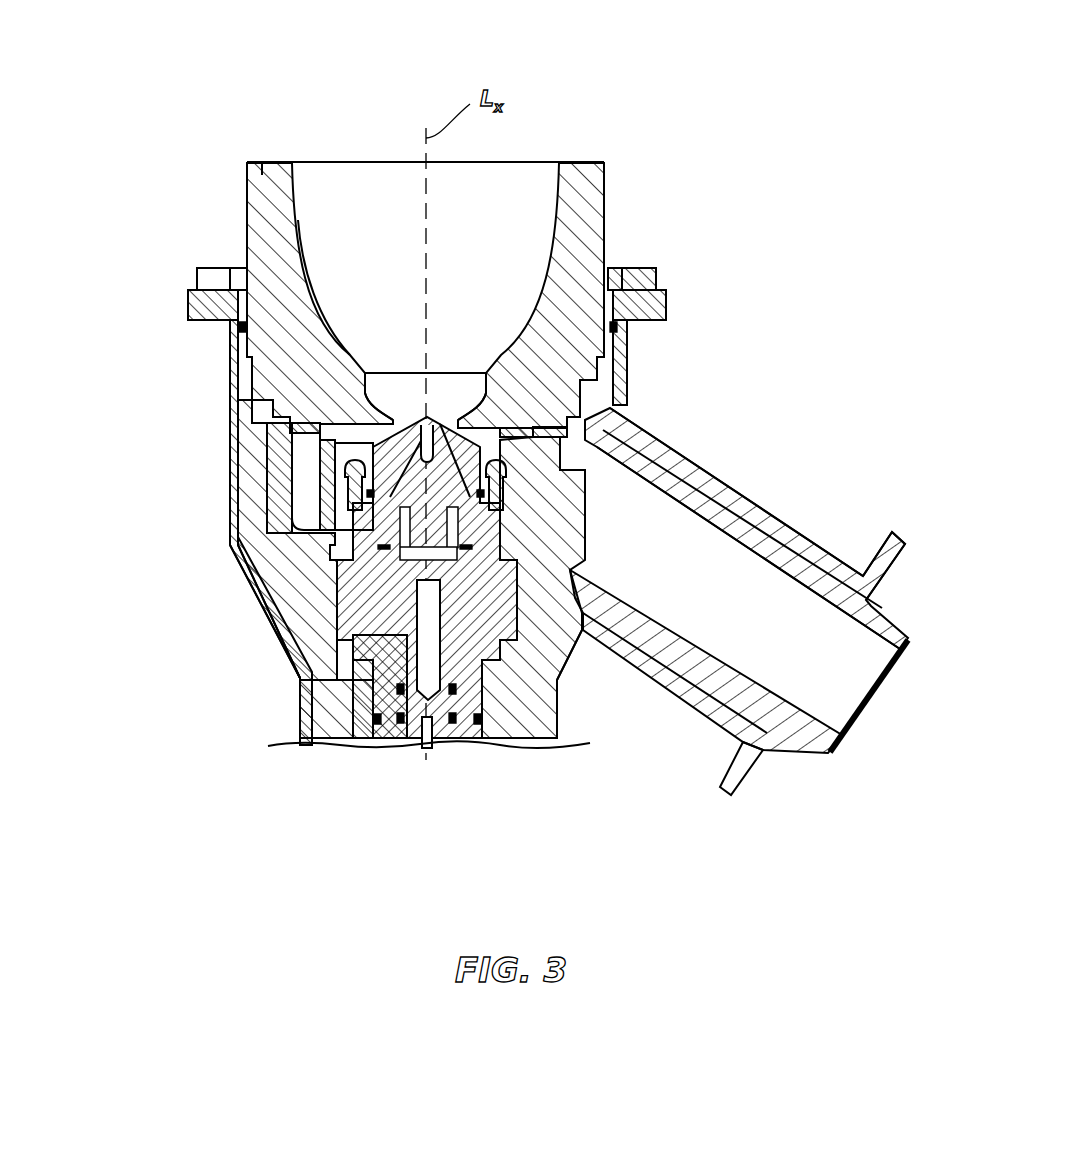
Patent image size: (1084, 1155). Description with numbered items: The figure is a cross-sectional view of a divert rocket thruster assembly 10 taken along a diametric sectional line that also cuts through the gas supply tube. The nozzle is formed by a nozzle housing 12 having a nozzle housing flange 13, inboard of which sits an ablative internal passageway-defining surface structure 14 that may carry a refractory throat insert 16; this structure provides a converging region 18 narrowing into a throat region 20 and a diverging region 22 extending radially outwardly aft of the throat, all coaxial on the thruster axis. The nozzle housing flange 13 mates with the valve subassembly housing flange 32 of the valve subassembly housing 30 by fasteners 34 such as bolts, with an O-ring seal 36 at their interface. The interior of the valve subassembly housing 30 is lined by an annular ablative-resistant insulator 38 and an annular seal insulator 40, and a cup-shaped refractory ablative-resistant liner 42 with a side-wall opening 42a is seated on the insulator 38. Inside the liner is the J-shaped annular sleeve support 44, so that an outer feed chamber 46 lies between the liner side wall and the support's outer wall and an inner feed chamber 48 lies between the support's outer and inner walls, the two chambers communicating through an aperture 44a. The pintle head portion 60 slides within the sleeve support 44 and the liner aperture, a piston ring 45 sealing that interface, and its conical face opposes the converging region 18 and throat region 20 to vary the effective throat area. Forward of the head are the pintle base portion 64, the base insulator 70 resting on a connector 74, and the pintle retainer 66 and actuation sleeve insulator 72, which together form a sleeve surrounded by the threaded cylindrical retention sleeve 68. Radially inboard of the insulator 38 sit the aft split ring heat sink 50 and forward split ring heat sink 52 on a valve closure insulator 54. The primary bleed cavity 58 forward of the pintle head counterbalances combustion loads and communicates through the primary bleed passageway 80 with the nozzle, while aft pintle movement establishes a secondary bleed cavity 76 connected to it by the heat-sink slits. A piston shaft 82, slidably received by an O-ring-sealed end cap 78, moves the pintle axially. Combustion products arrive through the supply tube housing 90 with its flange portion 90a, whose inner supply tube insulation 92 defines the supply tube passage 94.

The thruster assembly 10 is at (603, 130).
The nozzle housing 12 is at (245, 178).
The nozzle housing flange 13 is at (190, 293).
The internal passageway-defining surface structure 14 is at (283, 185).
The throat insert 16 is at (475, 400).
The converging region 18 is at (350, 368).
The throat region 20 is at (392, 400).
The diverging region 22 is at (378, 392).
The valve subassembly housing 30 is at (232, 340).
The valve subassembly housing flange 32 is at (188, 312).
The fasteners 34 is at (205, 278).
The O-ring seal 36 is at (623, 333).
The ablative-resistant insulator 38 is at (250, 487).
The seal insulator 40 is at (240, 365).
The ablative-resistant liner 42 is at (300, 462).
The opening 42a is at (512, 497).
The annular sleeve support 44 is at (280, 472).
The aperture 44a is at (262, 477).
The piston ring 45 is at (500, 440).
The outer feed chamber 46 is at (620, 412).
The inner feed chamber 48 is at (617, 443).
The aft split ring heat sink 50 is at (572, 572).
The forward split ring heat sink 52 is at (575, 620).
The valve closure insulator 54 is at (490, 668).
The primary bleed cavity 58 is at (573, 540).
The pintle head portion 60 is at (445, 440).
The pintle base portion 64 is at (248, 527).
The pintle retainer 66 is at (250, 557).
The cylindrical retention sleeve 68 is at (270, 607).
The base insulator 70 is at (240, 585).
The actuation sleeve insulator 72 is at (300, 650).
The connector 74 is at (345, 667).
The secondary bleed cavity 76 is at (310, 678).
The end cap 78 is at (310, 712).
The primary bleed passageway 80 is at (432, 425).
The piston shaft 82 is at (418, 748).
The supply tube housing 90 is at (782, 508).
The flange portion 90a is at (892, 538).
The supply tube insulation 92 is at (690, 665).
The supply tube passage 94 is at (775, 617).